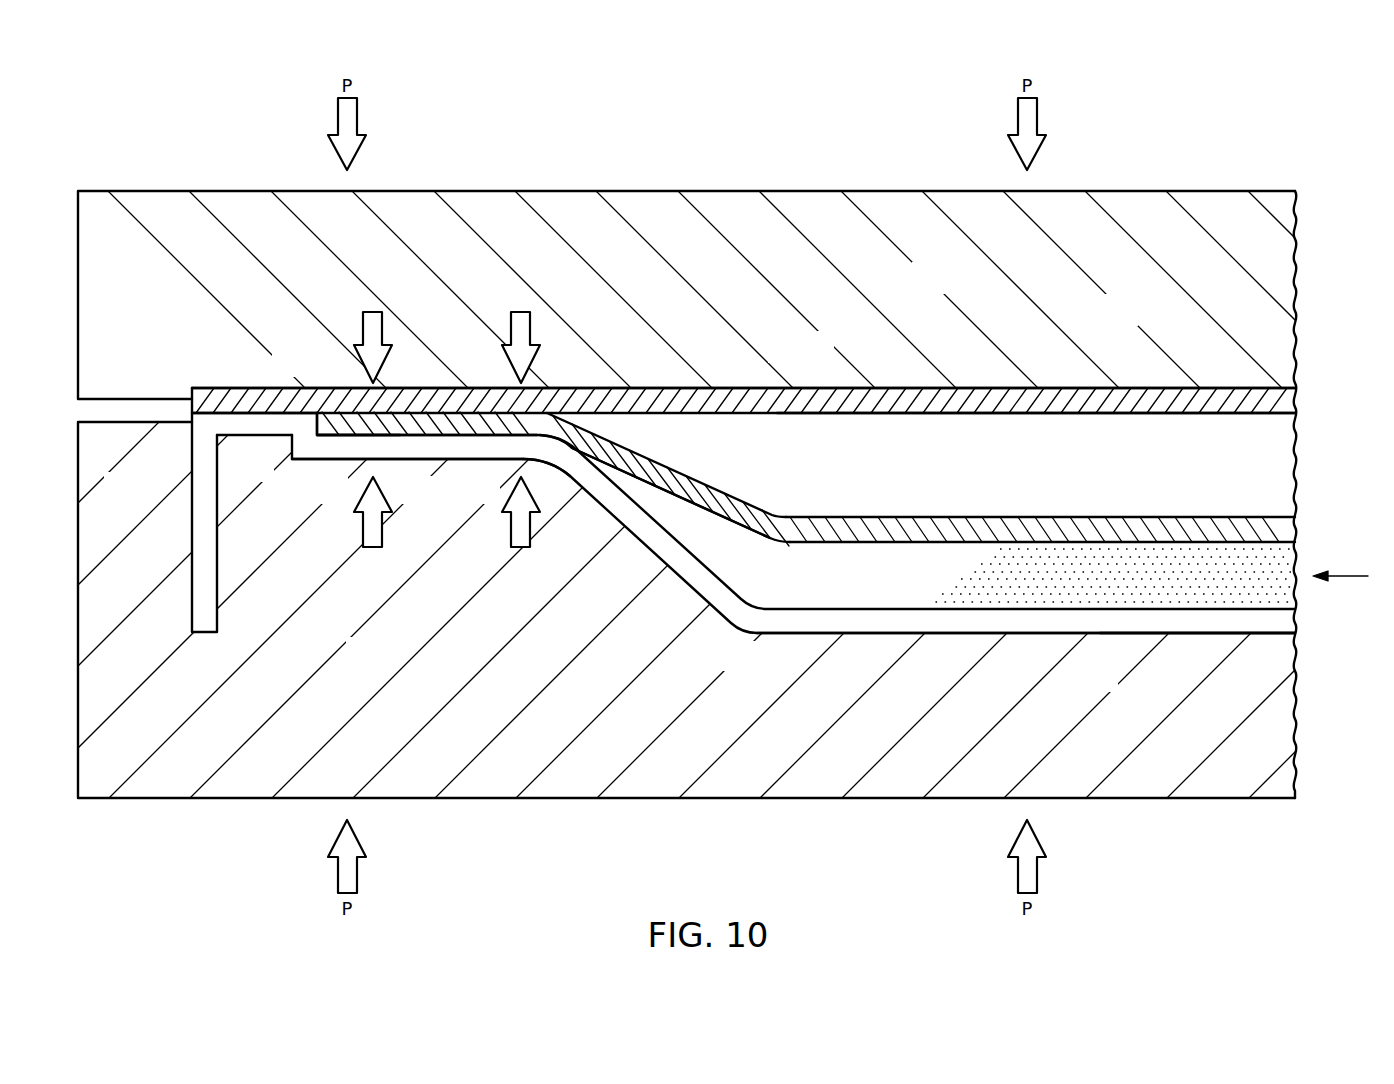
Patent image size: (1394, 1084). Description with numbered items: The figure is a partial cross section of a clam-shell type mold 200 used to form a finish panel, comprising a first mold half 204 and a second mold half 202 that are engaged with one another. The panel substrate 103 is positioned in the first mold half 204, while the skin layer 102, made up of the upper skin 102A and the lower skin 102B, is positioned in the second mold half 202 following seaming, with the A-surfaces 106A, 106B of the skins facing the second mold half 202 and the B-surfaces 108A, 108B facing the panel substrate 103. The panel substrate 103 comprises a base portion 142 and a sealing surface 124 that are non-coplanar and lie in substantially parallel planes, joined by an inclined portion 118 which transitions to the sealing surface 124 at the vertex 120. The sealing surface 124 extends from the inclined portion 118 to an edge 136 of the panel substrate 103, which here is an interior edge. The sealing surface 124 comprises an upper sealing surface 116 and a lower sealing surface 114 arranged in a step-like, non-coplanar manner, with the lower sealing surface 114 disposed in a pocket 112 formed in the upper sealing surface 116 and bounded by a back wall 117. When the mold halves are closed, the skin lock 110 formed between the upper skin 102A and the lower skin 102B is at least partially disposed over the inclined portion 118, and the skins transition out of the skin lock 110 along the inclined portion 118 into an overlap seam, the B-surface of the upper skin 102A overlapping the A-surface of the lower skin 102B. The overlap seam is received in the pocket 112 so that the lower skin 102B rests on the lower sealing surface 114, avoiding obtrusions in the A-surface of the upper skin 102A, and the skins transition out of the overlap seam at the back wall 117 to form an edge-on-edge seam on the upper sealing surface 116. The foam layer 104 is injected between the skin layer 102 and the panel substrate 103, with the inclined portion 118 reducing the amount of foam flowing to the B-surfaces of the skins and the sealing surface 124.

The mold 200 is at (1232, 153).
The second mold half 202 is at (78, 207).
The first mold half 204 is at (78, 783).
The skin layer 102 is at (743, 467).
The upper skin 102A is at (1072, 390).
The lower skin 102B is at (758, 540).
The panel substrate 103 is at (1258, 642).
The foam layer 104 is at (1290, 590).
The A-surface of upper skin 106A is at (787, 388).
The A-surface of lower skin 106B is at (633, 447).
The B-surface of upper skin 108A is at (843, 413).
The B-surface of lower skin 108B is at (958, 552).
The skin lock 110 is at (1305, 388).
The pocket 112 is at (336, 456).
The lower sealing surface 114 is at (424, 430).
The upper sealing surface 116 is at (258, 408).
The back wall 117 is at (304, 424).
The inclined portion 118 is at (683, 553).
The vertex 120 is at (527, 462).
The sealing surface 124 is at (218, 600).
The edge 136 is at (193, 483).
The base portion 142 is at (1100, 635).